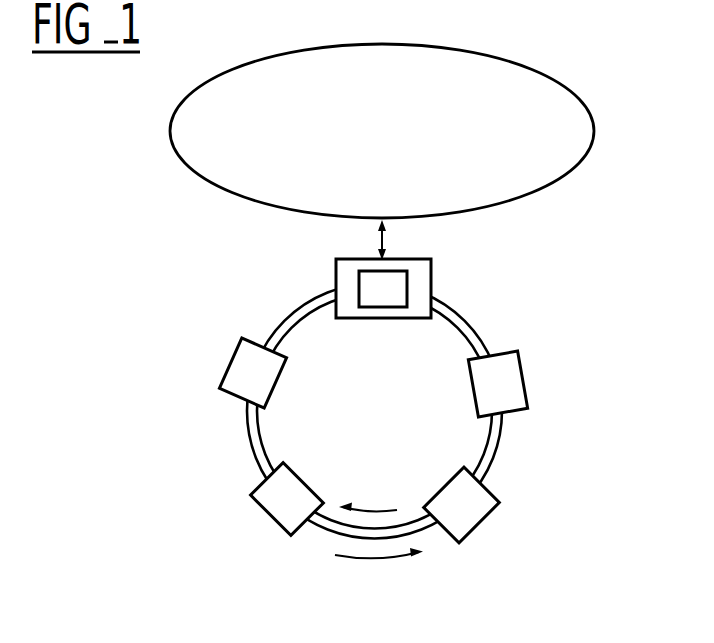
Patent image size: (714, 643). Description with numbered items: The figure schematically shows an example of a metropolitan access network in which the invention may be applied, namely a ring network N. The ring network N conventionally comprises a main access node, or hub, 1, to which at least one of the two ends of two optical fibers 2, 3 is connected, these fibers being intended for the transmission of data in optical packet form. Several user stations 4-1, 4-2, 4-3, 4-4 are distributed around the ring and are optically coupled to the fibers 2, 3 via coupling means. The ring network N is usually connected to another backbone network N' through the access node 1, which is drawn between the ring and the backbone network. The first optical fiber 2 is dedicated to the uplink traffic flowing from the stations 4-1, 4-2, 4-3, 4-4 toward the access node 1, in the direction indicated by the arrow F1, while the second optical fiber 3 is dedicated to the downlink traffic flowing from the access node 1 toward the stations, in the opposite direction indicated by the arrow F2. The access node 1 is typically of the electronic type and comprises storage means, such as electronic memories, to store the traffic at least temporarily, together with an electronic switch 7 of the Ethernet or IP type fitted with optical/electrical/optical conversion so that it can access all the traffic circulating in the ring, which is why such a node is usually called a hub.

The main access node 1 is at (336, 259).
The electronic switch 7 is at (407, 277).
The first optical fiber 2 is at (248, 437).
The second optical fiber 3 is at (259, 438).
The user station 4-1 is at (231, 362).
The user station 4-2 is at (270, 514).
The user station 4-3 is at (485, 518).
The user station 4-4 is at (530, 375).
The ring network N is at (324, 405).
The backbone network N' is at (382, 131).
The uplink traffic arrow F1 is at (373, 562).
The downlink traffic arrow F2 is at (378, 510).